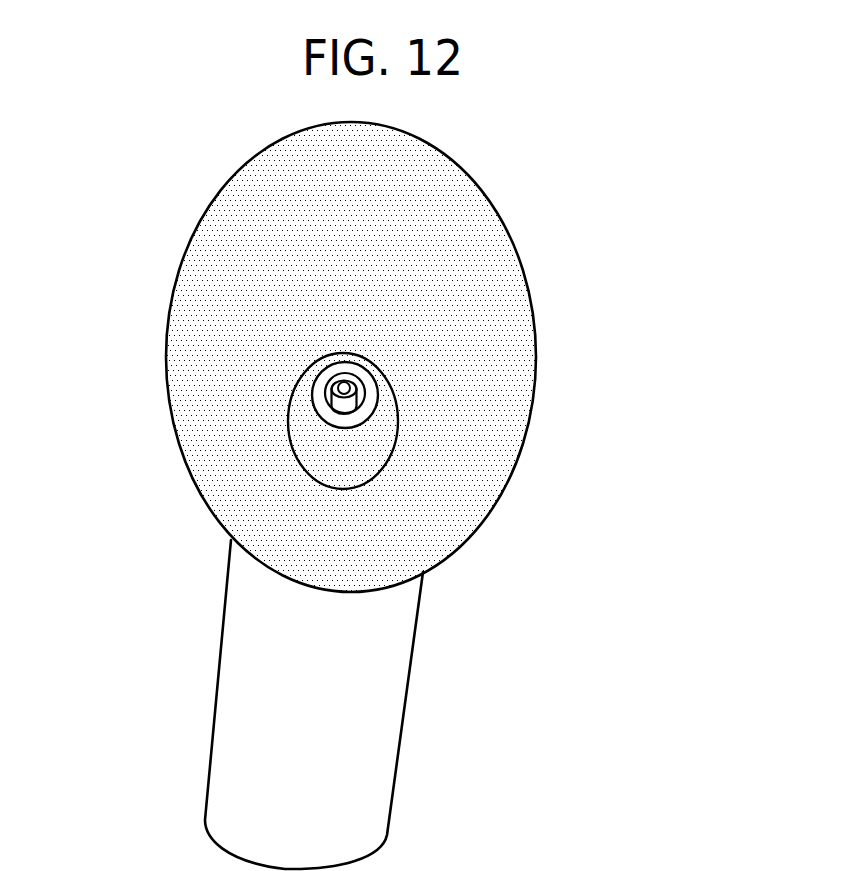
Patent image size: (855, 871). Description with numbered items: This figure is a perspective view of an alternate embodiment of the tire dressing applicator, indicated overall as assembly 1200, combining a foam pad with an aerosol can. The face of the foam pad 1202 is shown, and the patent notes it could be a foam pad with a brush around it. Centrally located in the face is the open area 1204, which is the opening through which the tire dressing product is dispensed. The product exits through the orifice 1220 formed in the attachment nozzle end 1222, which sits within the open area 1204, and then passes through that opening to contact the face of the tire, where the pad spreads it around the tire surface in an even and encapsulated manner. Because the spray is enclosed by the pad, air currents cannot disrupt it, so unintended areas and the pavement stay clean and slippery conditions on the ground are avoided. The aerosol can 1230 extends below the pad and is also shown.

The fan assembly 1200 is at (512, 133).
The foam pad 1202 is at (480, 250).
The open area 1204 is at (300, 432).
The orifice 1220 is at (352, 385).
The attachment nozzle end 1222 is at (357, 420).
The aerosol can 1230 is at (400, 670).